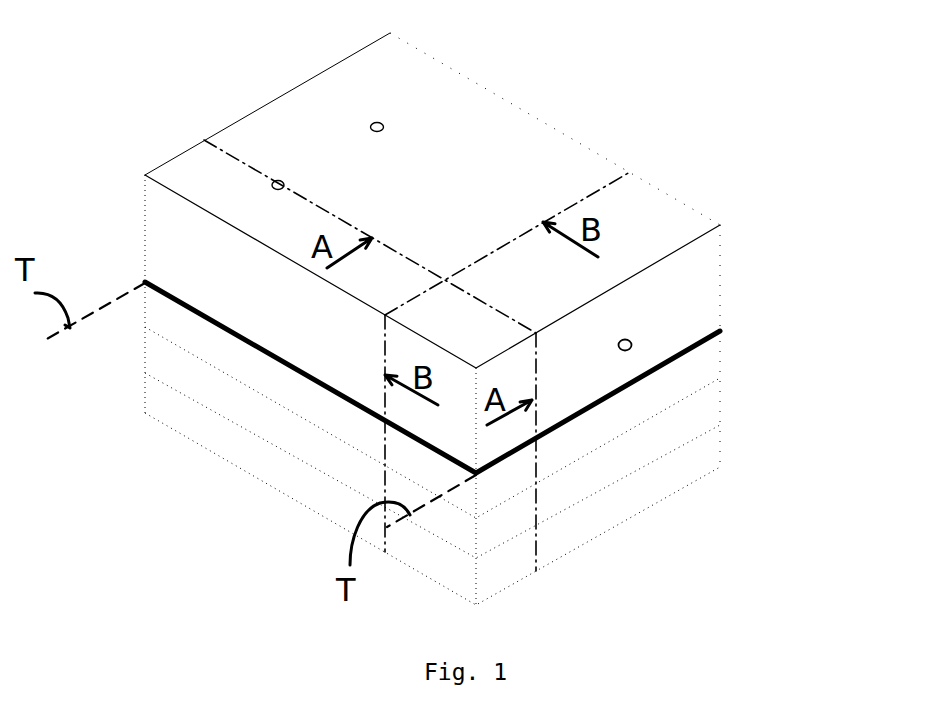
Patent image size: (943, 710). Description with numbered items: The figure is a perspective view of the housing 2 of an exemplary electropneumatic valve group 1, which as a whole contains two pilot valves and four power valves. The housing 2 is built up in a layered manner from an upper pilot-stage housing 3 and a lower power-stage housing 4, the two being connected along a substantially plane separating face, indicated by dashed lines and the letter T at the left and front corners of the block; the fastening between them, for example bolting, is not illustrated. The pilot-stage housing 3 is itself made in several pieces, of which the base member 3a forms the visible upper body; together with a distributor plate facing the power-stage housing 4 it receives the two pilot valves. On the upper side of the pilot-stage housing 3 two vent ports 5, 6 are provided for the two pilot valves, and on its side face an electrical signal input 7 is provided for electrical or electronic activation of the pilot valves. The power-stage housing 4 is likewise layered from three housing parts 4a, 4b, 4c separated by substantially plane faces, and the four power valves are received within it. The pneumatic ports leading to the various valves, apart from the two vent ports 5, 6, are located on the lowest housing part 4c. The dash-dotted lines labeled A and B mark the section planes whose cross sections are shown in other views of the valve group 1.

The electropneumatic valve group 1 is at (664, 111).
The housing 2 is at (690, 408).
The pilot-stage housing 3 is at (141, 175).
The base member 3a is at (650, 210).
The power-stage housing 4 is at (141, 284).
The housing part 4a is at (252, 365).
The housing part 4b is at (292, 427).
The lowest housing part 4c is at (310, 490).
The vent port 5 is at (280, 178).
The vent port 6 is at (375, 121).
The electrical signal input 7 is at (630, 353).